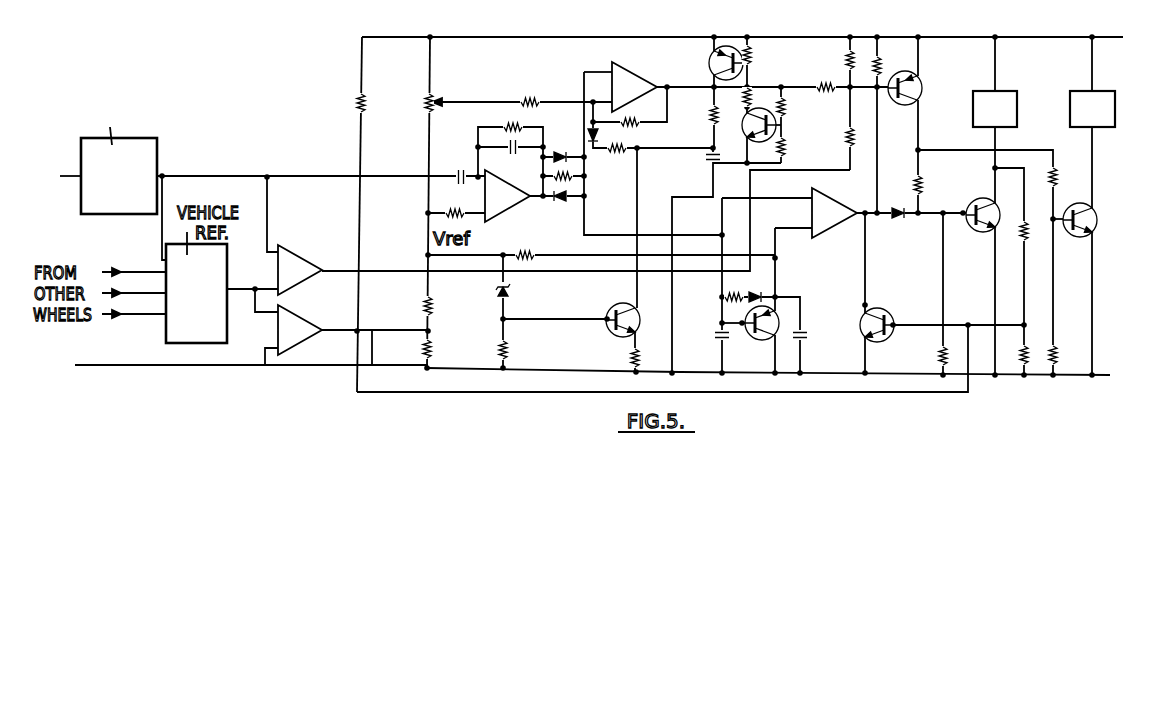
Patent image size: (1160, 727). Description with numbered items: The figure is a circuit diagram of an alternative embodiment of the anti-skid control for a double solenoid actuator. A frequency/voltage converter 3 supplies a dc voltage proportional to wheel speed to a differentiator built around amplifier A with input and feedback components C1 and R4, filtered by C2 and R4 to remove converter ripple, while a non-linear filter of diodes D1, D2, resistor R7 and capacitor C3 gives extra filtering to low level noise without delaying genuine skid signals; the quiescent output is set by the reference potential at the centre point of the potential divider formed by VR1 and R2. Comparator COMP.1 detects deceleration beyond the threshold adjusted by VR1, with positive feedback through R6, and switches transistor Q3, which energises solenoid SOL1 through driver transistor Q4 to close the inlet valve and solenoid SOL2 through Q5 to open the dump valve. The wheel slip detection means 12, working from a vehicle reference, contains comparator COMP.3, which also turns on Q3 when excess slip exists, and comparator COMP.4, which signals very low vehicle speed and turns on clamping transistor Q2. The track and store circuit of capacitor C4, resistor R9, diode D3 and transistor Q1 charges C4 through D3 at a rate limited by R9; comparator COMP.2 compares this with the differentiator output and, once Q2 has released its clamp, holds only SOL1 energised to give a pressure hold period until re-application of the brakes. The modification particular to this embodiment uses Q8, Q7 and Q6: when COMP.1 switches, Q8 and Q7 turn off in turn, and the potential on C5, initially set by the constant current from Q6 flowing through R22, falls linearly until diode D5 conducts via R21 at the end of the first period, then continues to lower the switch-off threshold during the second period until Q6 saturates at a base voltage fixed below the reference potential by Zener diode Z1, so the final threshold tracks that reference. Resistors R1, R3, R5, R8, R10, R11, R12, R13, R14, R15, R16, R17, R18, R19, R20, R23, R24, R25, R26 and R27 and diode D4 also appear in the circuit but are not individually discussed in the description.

The frequency/voltage converter 3 is at (111, 187).
The wheel slip detection means 12 is at (245, 356).
The first threshold comparator COMP.1 is at (628, 83).
The second threshold comparator COMP.2 is at (825, 213).
The wheel slip comparator COMP.3 is at (292, 270).
The low speed comparator COMP.4 is at (295, 332).
The differentiator amplifier A is at (507, 196).
The resistor R1 is at (348, 103).
The potential divider resistor R2 is at (411, 305).
The resistor R3 is at (455, 203).
The differentiator feedback resistor R4 is at (504, 119).
The resistor R5 is at (533, 92).
The positive feedback resistor R6 is at (637, 131).
The non-linear filter resistor R7 is at (572, 176).
The resistor R8 is at (525, 246).
The charging rate resistor R9 is at (737, 287).
The resistor R10 is at (828, 78).
The resistor R11 is at (833, 58).
The resistor R12 is at (894, 59).
The resistor R13 is at (937, 185).
The resistor R14 is at (926, 357).
The resistor R15 is at (1021, 242).
The resistor R16 is at (1028, 364).
The resistor R17 is at (833, 135).
The resistor R18 is at (1078, 386).
The resistor R19 is at (484, 348).
The resistor R20 is at (616, 358).
The diode series resistor R21 is at (618, 158).
The current setting resistor R22 is at (695, 116).
The resistor R23 is at (766, 56).
The resistor R24 is at (765, 87).
The resistor R25 is at (801, 112).
The resistor R26 is at (801, 150).
The resistor R27 is at (1058, 178).
The threshold setting potentiometer VR1 is at (408, 103).
The differentiator input capacitor C1 is at (455, 167).
The filter capacitor C2 is at (508, 157).
The non-linear filter capacitor C3 is at (705, 335).
The track and store capacitor C4 is at (814, 341).
The timing capacitor C5 is at (699, 163).
The non-linear filter diode D1 is at (561, 144).
The non-linear filter diode D2 is at (564, 206).
The charging diode D3 is at (762, 300).
The diode D4 is at (896, 200).
The threshold diode D5 is at (591, 137).
The Zener diode Z1 is at (515, 295).
The track and store transistor Q1 is at (756, 335).
The clamping transistor Q2 is at (877, 336).
The OR gate transistor Q3 is at (924, 85).
The solenoid driver transistor Q4 is at (979, 227).
The dump solenoid driver transistor Q5 is at (1078, 232).
The constant current transistor Q6 is at (610, 327).
The switching transistor Q7 is at (704, 65).
The switching transistor Q8 is at (746, 142).
The inlet valve solenoid SOL1 is at (995, 109).
The dump valve solenoid SOL2 is at (1092, 109).